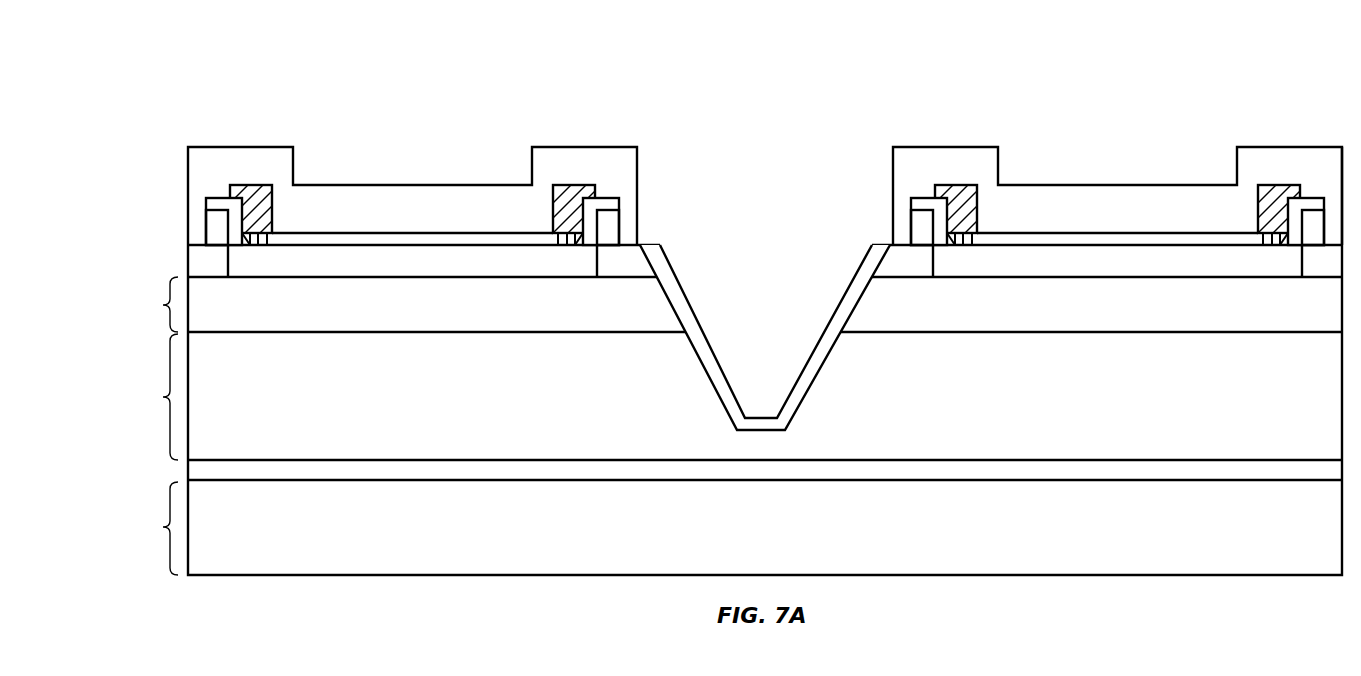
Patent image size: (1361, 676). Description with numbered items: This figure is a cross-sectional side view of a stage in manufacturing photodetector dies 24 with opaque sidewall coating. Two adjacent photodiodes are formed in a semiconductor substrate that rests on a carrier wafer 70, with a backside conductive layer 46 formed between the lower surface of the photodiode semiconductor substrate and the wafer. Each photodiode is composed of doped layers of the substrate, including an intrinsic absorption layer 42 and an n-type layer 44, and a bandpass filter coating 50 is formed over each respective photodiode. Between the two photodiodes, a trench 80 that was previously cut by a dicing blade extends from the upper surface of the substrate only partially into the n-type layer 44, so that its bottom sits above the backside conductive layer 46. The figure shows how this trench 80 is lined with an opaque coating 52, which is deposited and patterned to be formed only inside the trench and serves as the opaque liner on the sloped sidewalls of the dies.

The photodetector die 24 is at (433, 96).
The intrinsic absorption layer 42 is at (738, 288).
The n-type layer 44 is at (738, 397).
The backside conductive layer 46 is at (192, 472).
The bandpass filter coating 50 is at (578, 158).
The opaque coating 52 is at (663, 262).
The carrier wafer 70 is at (738, 361).
The trench 80 is at (754, 267).